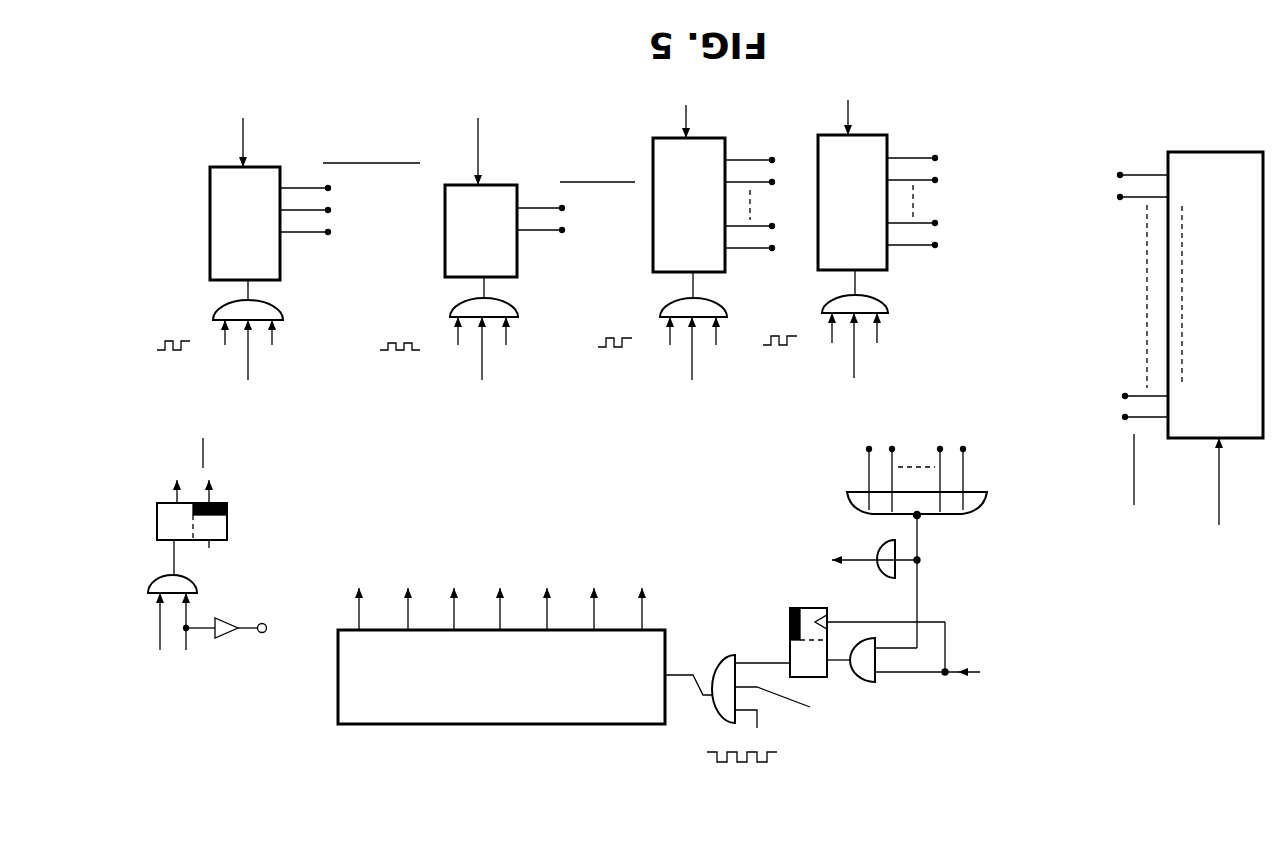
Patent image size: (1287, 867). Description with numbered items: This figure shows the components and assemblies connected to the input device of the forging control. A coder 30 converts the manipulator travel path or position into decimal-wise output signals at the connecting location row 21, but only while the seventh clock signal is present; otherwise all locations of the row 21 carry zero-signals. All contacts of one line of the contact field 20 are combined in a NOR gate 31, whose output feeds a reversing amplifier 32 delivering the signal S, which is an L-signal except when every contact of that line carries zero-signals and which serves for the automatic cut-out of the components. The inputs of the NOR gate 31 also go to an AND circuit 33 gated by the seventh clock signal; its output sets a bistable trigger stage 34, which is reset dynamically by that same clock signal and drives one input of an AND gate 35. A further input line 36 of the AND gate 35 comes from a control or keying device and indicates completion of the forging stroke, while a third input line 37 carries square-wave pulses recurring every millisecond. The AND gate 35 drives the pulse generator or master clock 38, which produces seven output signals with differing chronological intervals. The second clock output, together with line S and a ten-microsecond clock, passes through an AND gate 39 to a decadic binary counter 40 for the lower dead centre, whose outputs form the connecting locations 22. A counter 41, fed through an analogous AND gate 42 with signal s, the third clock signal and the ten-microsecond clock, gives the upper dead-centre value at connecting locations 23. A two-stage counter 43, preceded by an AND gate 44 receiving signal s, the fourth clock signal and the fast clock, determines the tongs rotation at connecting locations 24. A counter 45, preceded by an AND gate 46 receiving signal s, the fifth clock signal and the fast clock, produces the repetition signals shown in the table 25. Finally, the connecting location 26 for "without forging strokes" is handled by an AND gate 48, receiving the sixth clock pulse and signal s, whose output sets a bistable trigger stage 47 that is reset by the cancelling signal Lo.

The contact field 20 is at (922, 448).
The connecting location row 21 is at (1113, 165).
The connecting locations 22 is at (938, 150).
The connecting locations 23 is at (782, 165).
The connecting locations 24 is at (555, 188).
The W1-W3 table 25 is at (325, 176).
The connecting location 26 is at (263, 622).
The coder 30 is at (1240, 160).
The NOR gate 31 is at (988, 498).
The reversing amplifier 32 is at (888, 578).
The AND circuit 33 is at (855, 684).
The bistable trigger stage 34 is at (790, 612).
The AND gate 35 is at (722, 662).
The input line 36 is at (789, 705).
The input line 37 is at (757, 728).
The pulse generator 38 is at (340, 712).
The AND gate 39 is at (888, 300).
The decadic binary counter 40 is at (832, 140).
The counter 41 is at (668, 143).
The AND gate 42 is at (726, 305).
The counter 43 is at (458, 186).
The AND gate 44 is at (517, 306).
The counter 45 is at (218, 172).
The AND gate 46 is at (225, 312).
The bistable trigger stage 47 is at (160, 500).
The AND gate 48 is at (165, 578).